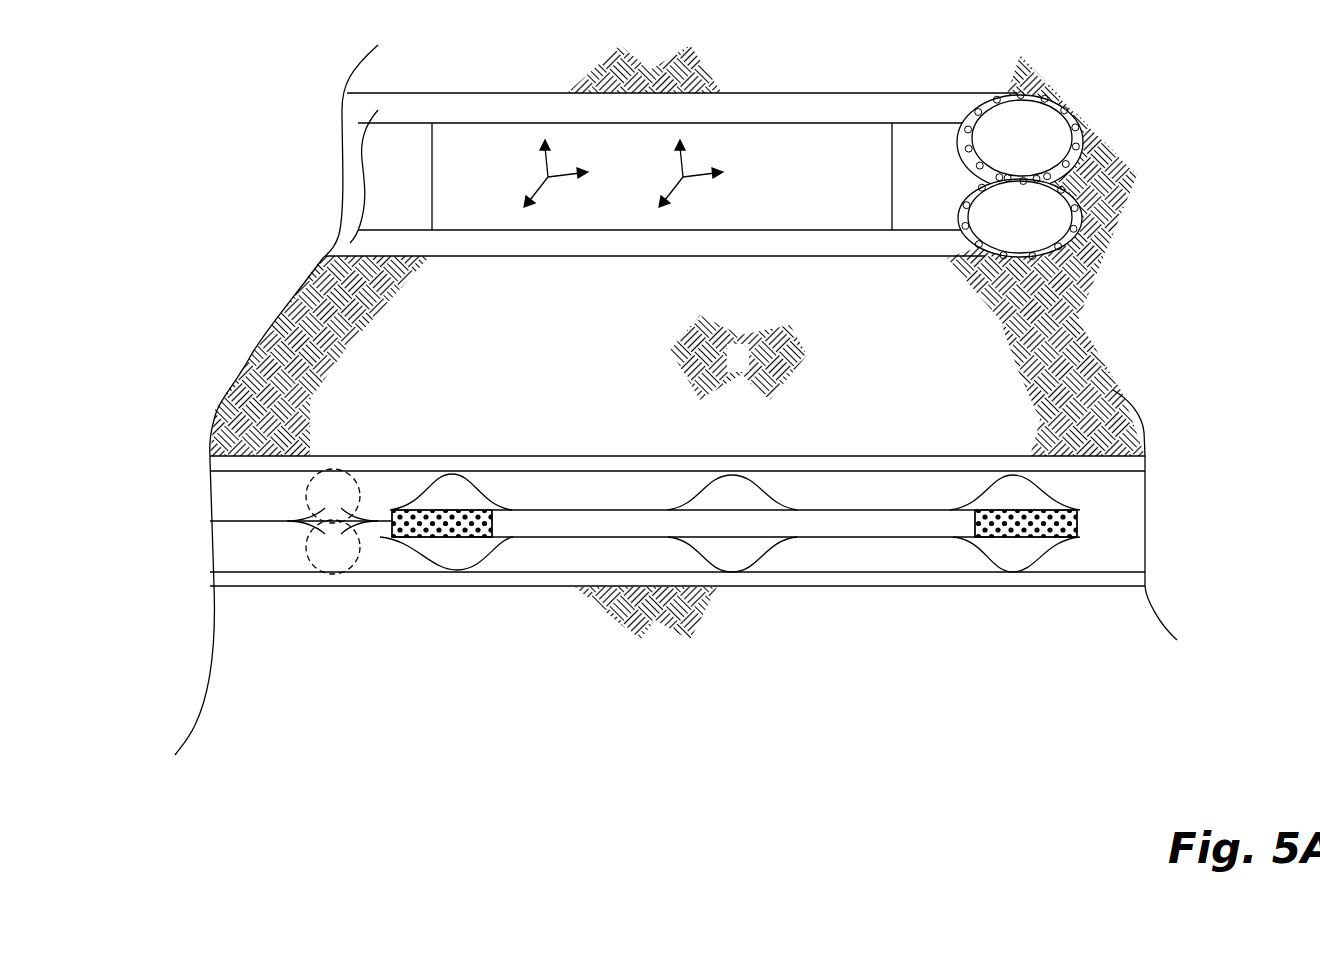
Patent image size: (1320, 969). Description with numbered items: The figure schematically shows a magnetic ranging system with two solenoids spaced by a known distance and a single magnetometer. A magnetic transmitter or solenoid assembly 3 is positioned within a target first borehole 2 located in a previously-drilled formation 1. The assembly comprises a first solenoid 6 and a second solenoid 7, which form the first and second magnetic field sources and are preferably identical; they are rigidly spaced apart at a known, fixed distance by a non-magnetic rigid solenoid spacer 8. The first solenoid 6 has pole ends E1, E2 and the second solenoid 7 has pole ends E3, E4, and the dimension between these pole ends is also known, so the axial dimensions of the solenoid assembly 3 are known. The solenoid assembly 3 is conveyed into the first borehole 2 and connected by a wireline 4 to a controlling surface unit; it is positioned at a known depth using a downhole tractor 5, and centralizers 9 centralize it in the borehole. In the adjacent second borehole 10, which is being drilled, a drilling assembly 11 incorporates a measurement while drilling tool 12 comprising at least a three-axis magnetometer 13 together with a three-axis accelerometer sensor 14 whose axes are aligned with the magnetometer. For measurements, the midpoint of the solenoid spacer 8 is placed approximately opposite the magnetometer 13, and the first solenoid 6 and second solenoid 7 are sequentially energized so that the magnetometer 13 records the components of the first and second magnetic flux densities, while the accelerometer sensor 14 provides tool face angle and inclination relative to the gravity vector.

The formation 1 is at (746, 370).
The first borehole 2 is at (1124, 517).
The solenoid assembly 3 is at (563, 527).
The wireline 4 is at (235, 521).
The downhole tractor 5 is at (323, 568).
The first solenoid 6 is at (430, 537).
The second solenoid 7 is at (1043, 537).
The rigid solenoid spacer 8 is at (837, 520).
The centralizers 9 is at (759, 535).
The second borehole 10 is at (833, 108).
The drilling assembly 11 is at (950, 178).
The measurement while drilling (MWD) tool 12 is at (790, 182).
The magnetometer 13 is at (698, 183).
The three-axis accelerometer sensor 14 is at (560, 183).
The pole end E1 is at (958, 537).
The pole end E2 is at (1077, 535).
The pole end E3 is at (503, 533).
The pole end E4 is at (390, 535).